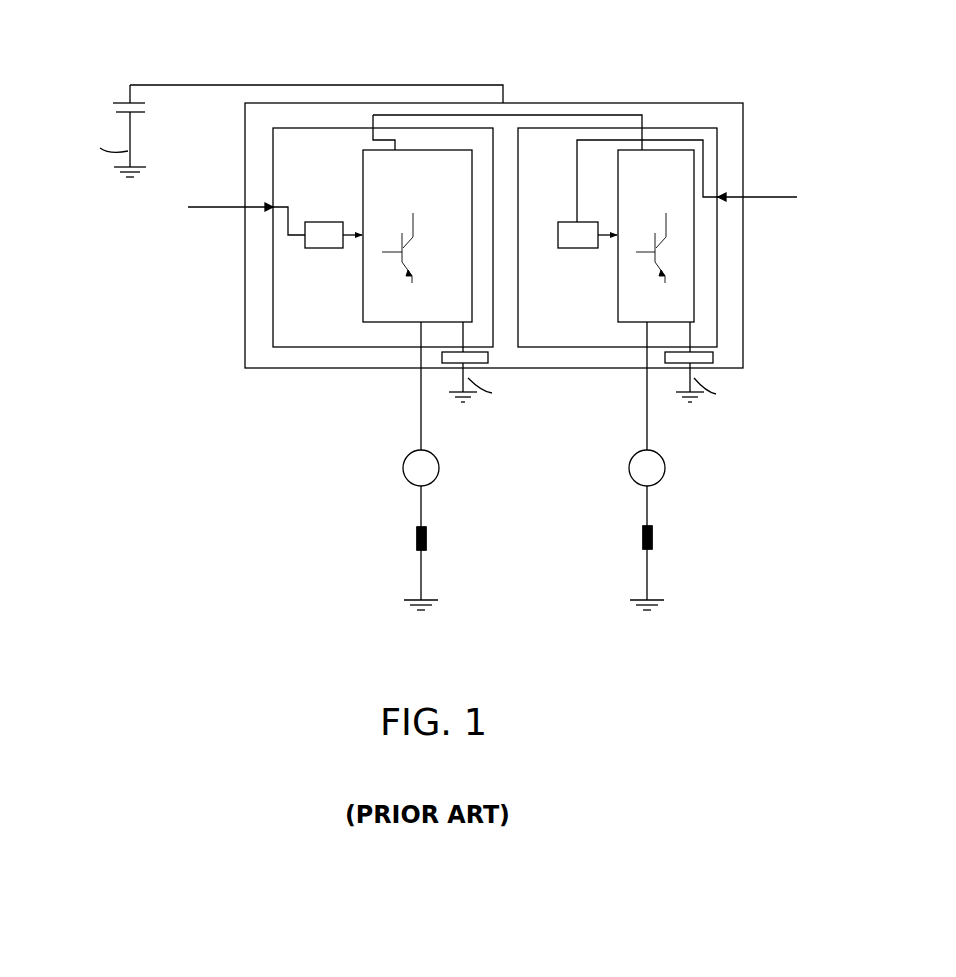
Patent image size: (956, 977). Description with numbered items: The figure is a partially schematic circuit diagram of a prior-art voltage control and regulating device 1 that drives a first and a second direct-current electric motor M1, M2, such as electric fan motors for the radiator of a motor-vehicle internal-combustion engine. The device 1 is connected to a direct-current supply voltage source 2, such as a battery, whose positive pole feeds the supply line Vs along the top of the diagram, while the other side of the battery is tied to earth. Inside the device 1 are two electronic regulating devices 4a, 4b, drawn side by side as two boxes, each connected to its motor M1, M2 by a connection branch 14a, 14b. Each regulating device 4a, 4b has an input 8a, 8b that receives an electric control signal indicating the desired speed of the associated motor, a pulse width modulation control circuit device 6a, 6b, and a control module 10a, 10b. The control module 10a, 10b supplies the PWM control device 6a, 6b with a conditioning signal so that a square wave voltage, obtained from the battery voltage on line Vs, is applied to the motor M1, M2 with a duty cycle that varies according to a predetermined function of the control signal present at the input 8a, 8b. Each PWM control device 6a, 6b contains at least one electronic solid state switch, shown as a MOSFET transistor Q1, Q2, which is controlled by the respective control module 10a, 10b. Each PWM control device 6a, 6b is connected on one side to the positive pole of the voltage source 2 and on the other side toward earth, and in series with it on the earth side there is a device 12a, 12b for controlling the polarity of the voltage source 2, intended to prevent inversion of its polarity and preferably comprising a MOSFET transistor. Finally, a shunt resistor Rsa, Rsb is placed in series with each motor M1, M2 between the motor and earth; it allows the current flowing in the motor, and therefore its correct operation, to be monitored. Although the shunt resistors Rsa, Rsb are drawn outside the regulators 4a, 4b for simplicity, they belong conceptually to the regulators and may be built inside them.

The voltage control and regulating device 1 is at (695, 101).
The direct-current supply voltage source 2 is at (125, 102).
The first electronic regulating device 4a is at (285, 349).
The second electronic regulating device 4b is at (718, 315).
The first PWM control circuit device 6a is at (384, 288).
The second PWM control circuit device 6b is at (702, 236).
The first input 8a is at (215, 207).
The second input 8b is at (760, 197).
The first control module 10a is at (326, 250).
The second control module 10b is at (578, 250).
The first polarity control device 12a is at (445, 366).
The second polarity control device 12b is at (714, 357).
The first connection branch 14a is at (420, 402).
The second connection branch 14b is at (646, 429).
The supply voltage Vs is at (185, 85).
The first MOSFET transistor Q1 is at (392, 261).
The second MOSFET transistor Q2 is at (647, 261).
The first direct-current electric motor M1 is at (402, 470).
The second direct-current electric motor M2 is at (667, 474).
The first shunt resistor Rsa is at (413, 545).
The second shunt resistor Rsb is at (656, 536).